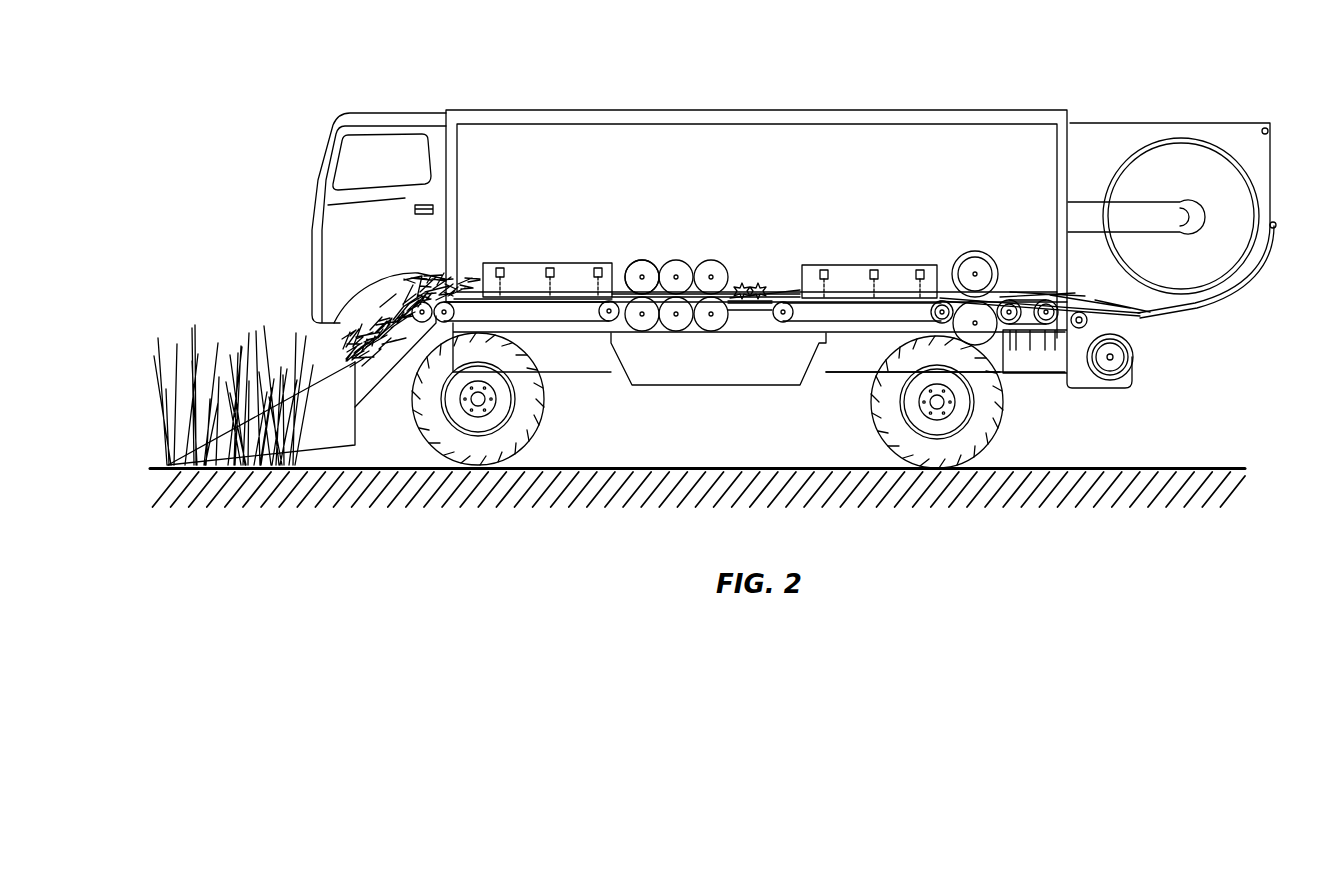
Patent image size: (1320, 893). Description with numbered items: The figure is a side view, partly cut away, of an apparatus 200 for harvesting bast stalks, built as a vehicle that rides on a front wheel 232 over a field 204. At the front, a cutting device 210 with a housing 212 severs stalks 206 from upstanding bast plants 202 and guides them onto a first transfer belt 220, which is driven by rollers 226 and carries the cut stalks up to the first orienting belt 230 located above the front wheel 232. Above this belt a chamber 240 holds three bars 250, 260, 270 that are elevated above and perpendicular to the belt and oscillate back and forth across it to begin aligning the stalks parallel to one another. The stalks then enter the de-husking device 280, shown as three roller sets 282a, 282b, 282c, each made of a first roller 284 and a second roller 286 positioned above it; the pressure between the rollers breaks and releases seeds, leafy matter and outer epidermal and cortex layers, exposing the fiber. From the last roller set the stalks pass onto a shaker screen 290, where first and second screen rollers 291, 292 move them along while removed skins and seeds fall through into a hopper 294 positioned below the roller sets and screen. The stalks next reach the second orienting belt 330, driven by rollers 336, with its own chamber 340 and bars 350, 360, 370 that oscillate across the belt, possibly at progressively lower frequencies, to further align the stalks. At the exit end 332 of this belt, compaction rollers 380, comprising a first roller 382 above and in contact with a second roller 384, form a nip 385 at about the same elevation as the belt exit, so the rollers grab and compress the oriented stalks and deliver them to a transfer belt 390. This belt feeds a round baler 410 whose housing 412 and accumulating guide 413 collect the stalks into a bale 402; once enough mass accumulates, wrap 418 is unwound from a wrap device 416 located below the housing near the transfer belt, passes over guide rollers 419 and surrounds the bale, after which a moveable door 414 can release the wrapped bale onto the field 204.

The apparatus 200 is at (362, 60).
The bast plants 202 is at (142, 393).
The field 204 is at (620, 468).
The stalks 206 is at (352, 357).
The cutting device 210 is at (300, 432).
The housing 212 is at (261, 413).
The first transfer belt 220 is at (383, 370).
The rollers 226 is at (422, 283).
The first orienting belt 230 is at (568, 308).
The front wheel 232 is at (545, 410).
The chamber 240 is at (551, 248).
The bar 250 is at (500, 268).
The bar 260 is at (550, 268).
The bar 270 is at (598, 268).
The de-husking device 280 is at (690, 274).
The roller set 282a is at (652, 252).
The roller set 282b is at (690, 252).
The roller set 282c is at (728, 259).
The first roller 284 is at (642, 275).
The second roller 286 is at (644, 318).
The shaker screen 290 is at (772, 253).
The first screen roller 291 is at (745, 284).
The second screen roller 292 is at (765, 286).
The hopper 294 is at (718, 359).
The second orienting belt 330 is at (861, 328).
The exit end 332 is at (840, 380).
The rollers 336 is at (778, 325).
The chamber 340 is at (876, 235).
The first bar 350 is at (826, 270).
The second bar 360 is at (874, 270).
The third bar 370 is at (920, 270).
The compaction rollers 380 is at (1012, 309).
The first roller 382 is at (984, 256).
The second roller 384 is at (985, 335).
The nip 385 is at (945, 300).
The transfer belt 390 is at (1025, 320).
The bale 402 is at (1181, 216).
The baler 410 is at (1127, 251).
The housing 412 is at (1178, 123).
The accumulating guide 413 is at (1136, 217).
The moveable door 414 is at (1190, 300).
The wrap device 416 is at (1113, 362).
The wrap 418 is at (1095, 330).
The guide rollers 419 is at (1080, 312).